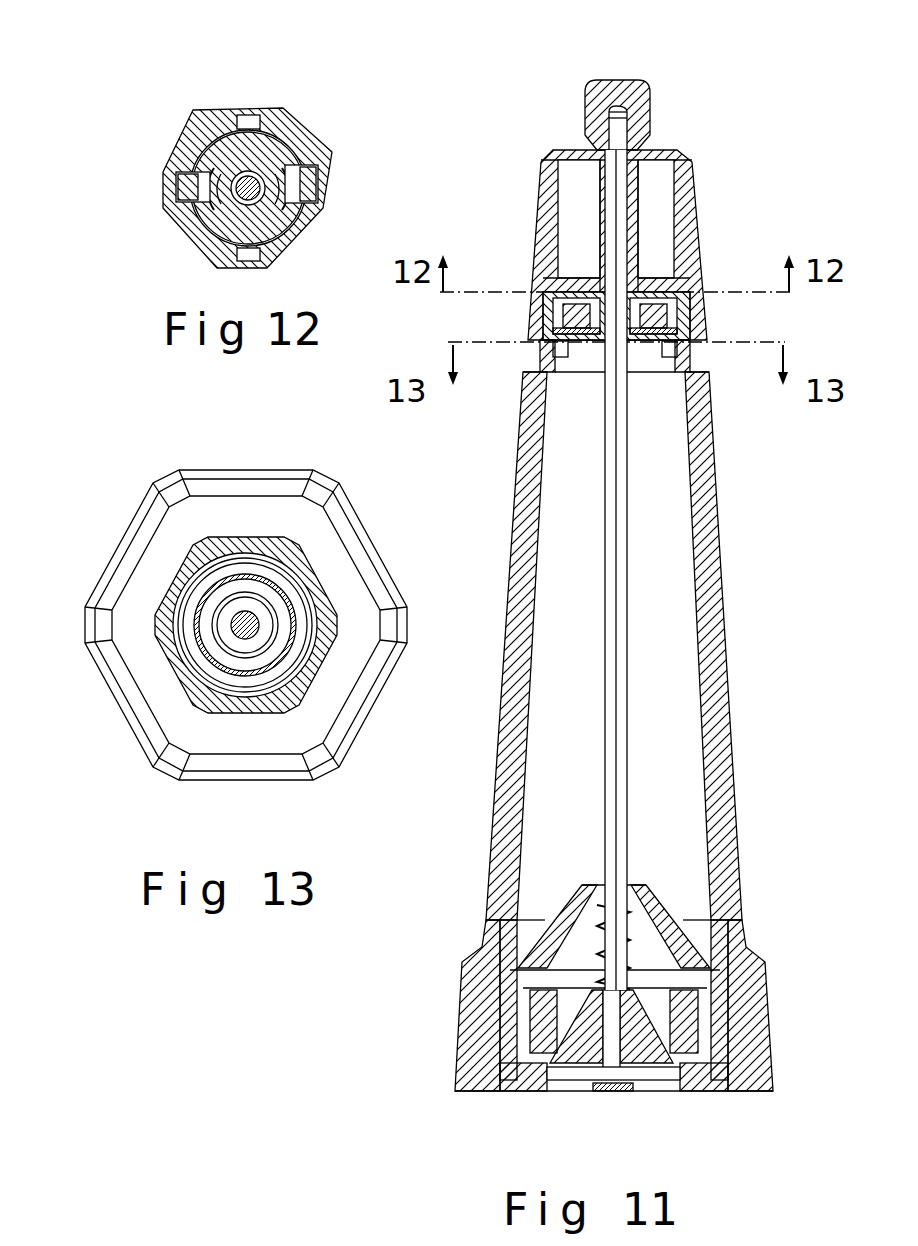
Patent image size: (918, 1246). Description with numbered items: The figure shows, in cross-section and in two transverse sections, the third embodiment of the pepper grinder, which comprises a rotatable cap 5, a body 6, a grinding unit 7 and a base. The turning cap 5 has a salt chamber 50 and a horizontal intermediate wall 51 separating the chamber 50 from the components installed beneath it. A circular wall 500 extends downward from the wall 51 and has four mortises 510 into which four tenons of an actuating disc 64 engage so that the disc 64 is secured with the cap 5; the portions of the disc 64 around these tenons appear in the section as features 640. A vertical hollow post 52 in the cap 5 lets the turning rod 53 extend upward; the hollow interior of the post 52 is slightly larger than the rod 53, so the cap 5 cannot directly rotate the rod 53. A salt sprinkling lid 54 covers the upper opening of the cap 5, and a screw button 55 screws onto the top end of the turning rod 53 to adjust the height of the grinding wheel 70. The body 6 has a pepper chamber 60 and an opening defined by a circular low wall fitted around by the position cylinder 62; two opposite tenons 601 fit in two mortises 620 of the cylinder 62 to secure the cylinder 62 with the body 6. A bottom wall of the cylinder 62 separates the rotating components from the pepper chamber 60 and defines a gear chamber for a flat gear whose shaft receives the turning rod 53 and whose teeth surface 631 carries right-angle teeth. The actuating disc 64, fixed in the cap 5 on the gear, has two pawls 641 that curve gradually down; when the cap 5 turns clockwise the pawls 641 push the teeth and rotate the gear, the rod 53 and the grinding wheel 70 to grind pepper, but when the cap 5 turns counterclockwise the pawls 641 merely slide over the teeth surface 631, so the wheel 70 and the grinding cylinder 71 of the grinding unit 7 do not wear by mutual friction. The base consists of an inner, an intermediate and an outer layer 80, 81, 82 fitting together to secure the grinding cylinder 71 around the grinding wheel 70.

In FIG. 12, the rotatable cap 5 is at (234, 179).
In FIG. 13, the rotatable cap 5 is at (326, 654).
In FIG. 11, the rotatable cap 5 is at (637, 239).
In FIG. 13, the body 6 is at (248, 625).
In FIG. 11, the body 6 is at (641, 646).
In FIG. 11, the grinding unit 7 is at (562, 1154).
In FIG. 11, the salt chamber 50 is at (572, 205).
In FIG. 11, the horizontal intermediate wall 51 is at (583, 277).
In FIG. 11, the vertical hollow post 52 is at (599, 200).
In FIG. 12, the turning rod 53 is at (236, 166).
In FIG. 13, the turning rod 53 is at (245, 615).
In FIG. 11, the turning rod 53 is at (623, 578).
In FIG. 11, the salt sprinkling lid 54 is at (583, 152).
In FIG. 11, the screw button 55 is at (649, 101).
In FIG. 11, the pepper chamber 60 is at (676, 748).
In FIG. 13, the position cylinder 62 is at (302, 586).
In FIG. 11, the position cylinder 62 is at (587, 372).
In FIG. 12, the actuating disc 64 is at (276, 158).
In FIG. 11, the actuating disc 64 is at (654, 287).
In FIG. 11, the grinding wheel 70 is at (643, 1067).
In FIG. 11, the grinding cylinder 71 is at (537, 1055).
In FIG. 11, the inner layer 80 is at (522, 1040).
In FIG. 11, the intermediate layer 81 is at (707, 1087).
In FIG. 11, the outer layer 82 is at (727, 1010).
In FIG. 13, the circular wall 500 is at (237, 697).
In FIG. 11, the circular wall 500 is at (680, 343).
In FIG. 12, the mortises 510 is at (247, 113).
In FIG. 13, the tenons 601 is at (317, 620).
In FIG. 13, the mortises 620 is at (193, 600).
In FIG. 11, the teeth surface 631 is at (553, 320).
In FIG. 12, the slot 640 is at (263, 107).
In FIG. 12, the pawls 641 is at (180, 217).
In FIG. 11, the pawls 641 is at (553, 305).